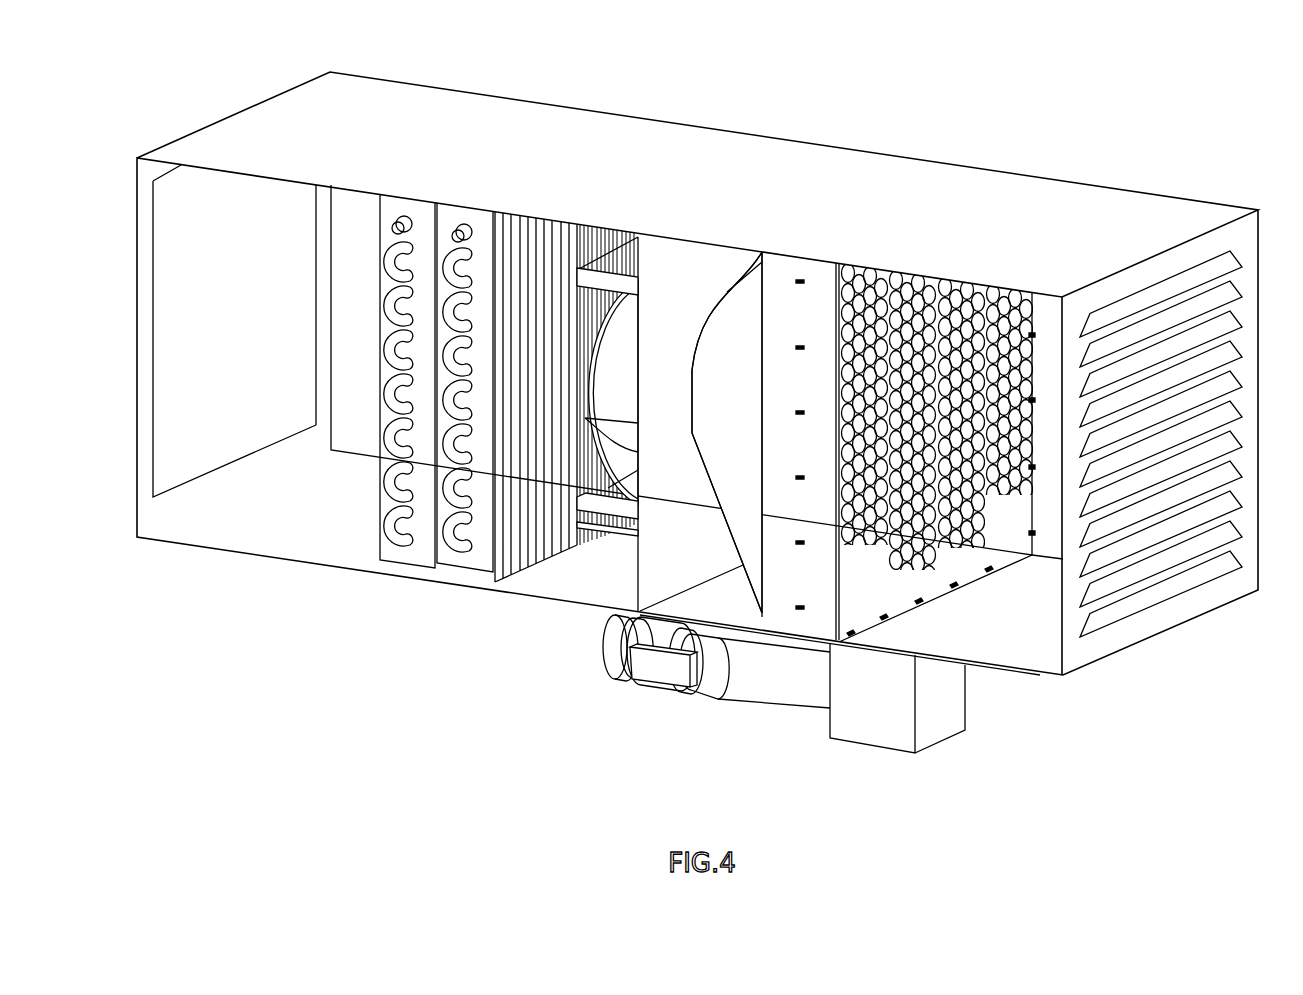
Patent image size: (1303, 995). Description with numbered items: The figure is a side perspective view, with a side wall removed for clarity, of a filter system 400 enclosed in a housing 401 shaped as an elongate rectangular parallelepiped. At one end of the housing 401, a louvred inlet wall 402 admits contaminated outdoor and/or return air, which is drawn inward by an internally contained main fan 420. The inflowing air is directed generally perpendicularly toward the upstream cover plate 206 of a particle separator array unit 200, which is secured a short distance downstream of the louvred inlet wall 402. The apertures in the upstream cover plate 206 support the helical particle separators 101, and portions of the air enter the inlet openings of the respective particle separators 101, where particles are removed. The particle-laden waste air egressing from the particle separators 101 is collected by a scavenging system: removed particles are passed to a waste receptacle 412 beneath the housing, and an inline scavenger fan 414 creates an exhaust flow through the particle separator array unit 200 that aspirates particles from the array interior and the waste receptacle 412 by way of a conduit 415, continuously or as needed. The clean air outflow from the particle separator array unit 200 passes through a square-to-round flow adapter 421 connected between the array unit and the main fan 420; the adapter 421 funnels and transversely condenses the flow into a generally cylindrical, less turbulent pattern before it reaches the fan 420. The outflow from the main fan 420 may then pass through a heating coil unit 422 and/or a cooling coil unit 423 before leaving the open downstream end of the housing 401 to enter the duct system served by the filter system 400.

The filter system 400 is at (848, 87).
The housing 401 is at (1152, 192).
The louvred inlet wall 402 is at (1221, 590).
The main fan 420 is at (617, 333).
The square-to-round flow adapter 421 is at (728, 318).
The heating coil unit 422 is at (535, 366).
The cooling coil unit 423 is at (407, 359).
The particle separator array unit 200 is at (817, 278).
The particle separator 101 is at (1008, 292).
The upstream cover plate 206 is at (1000, 545).
The inline scavenger fan 414 is at (672, 695).
The conduit 415 is at (793, 688).
The waste receptacle 412 is at (890, 716).